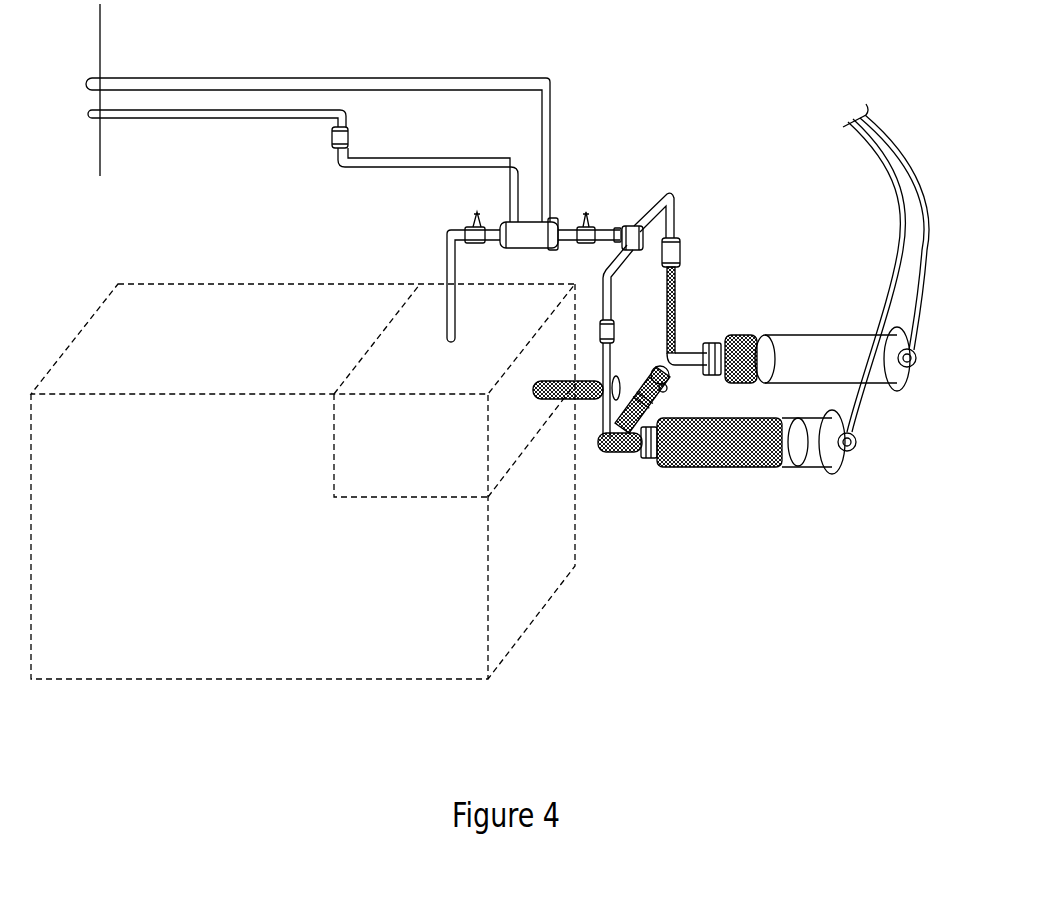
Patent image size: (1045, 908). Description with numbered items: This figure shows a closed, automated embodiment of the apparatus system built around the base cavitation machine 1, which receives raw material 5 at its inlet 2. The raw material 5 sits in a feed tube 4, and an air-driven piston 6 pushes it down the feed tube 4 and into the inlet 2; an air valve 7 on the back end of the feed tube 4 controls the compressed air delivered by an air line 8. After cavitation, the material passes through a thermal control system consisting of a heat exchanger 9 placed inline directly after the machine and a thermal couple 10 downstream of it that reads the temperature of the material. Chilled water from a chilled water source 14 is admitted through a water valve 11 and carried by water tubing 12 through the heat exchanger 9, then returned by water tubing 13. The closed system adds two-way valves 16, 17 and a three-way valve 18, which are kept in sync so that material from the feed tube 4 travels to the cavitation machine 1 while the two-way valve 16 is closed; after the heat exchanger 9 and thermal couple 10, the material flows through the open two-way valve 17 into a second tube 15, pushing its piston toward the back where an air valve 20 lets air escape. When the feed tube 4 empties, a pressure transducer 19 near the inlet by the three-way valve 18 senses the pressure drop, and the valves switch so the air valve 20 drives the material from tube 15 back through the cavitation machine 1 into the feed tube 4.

The base cavitation machine 1 is at (282, 680).
The inlet 2 is at (582, 400).
The feed tube 4 is at (818, 470).
The raw material 5 is at (735, 448).
The piston 6 is at (793, 466).
The air valve 7 is at (858, 442).
The air line 8 is at (897, 275).
The heat exchanger 9 is at (557, 222).
The thermal couple 10 is at (597, 225).
The water valve 11 is at (350, 137).
The water tubing 12 is at (370, 168).
The water tubing 13 is at (243, 78).
The chilled water source 14 is at (100, 30).
The tube 15 is at (826, 335).
The two-way valve 16 is at (615, 328).
The two-way valve 17 is at (683, 250).
The three-way valve 18 is at (650, 384).
The pressure transducer 19 is at (672, 384).
The air valve 20 is at (915, 362).